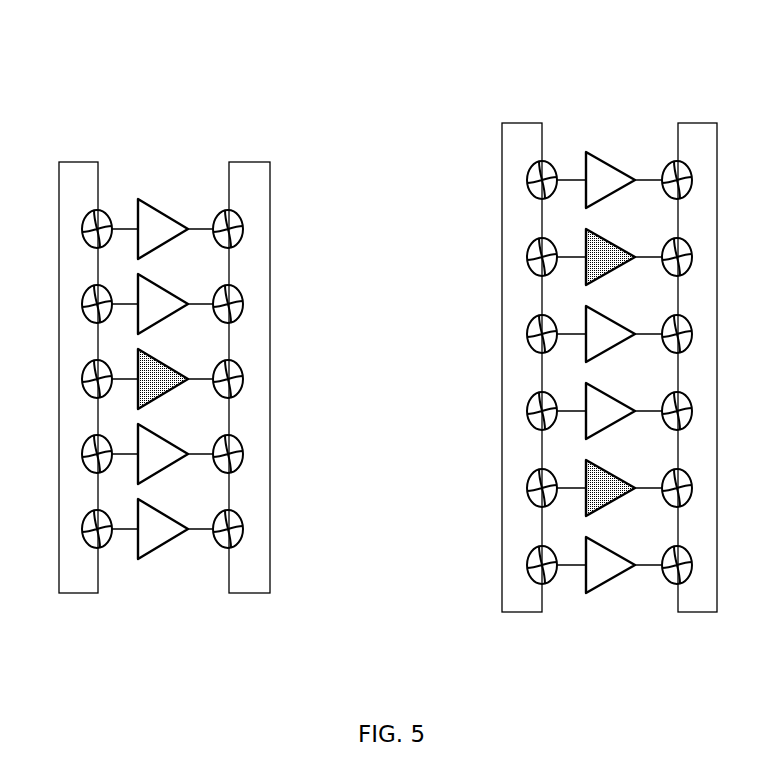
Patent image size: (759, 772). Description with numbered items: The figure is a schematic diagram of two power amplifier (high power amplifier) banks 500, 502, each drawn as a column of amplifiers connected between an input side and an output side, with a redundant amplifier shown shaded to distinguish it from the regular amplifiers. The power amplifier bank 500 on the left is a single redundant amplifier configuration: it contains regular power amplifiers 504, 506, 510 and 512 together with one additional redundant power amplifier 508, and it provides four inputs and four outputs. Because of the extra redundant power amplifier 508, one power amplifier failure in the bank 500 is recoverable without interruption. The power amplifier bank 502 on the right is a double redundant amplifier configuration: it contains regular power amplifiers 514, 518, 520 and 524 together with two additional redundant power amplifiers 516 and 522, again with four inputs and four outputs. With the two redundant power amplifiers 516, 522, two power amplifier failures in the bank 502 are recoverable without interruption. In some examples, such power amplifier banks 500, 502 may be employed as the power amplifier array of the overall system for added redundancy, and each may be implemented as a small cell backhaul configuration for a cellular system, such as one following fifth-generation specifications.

The power amplifier bank 500 is at (172, 56).
The power amplifier bank 502 is at (618, 56).
The power amplifier 504 is at (163, 212).
The power amplifier 506 is at (163, 287).
The redundant power amplifier 508 is at (163, 362).
The power amplifier 510 is at (163, 437).
The power amplifier 512 is at (163, 512).
The power amplifier 514 is at (609, 166).
The redundant power amplifier 516 is at (609, 243).
The power amplifier 518 is at (609, 320).
The power amplifier 520 is at (609, 397).
The redundant power amplifier 522 is at (609, 474).
The power amplifier 524 is at (609, 551).